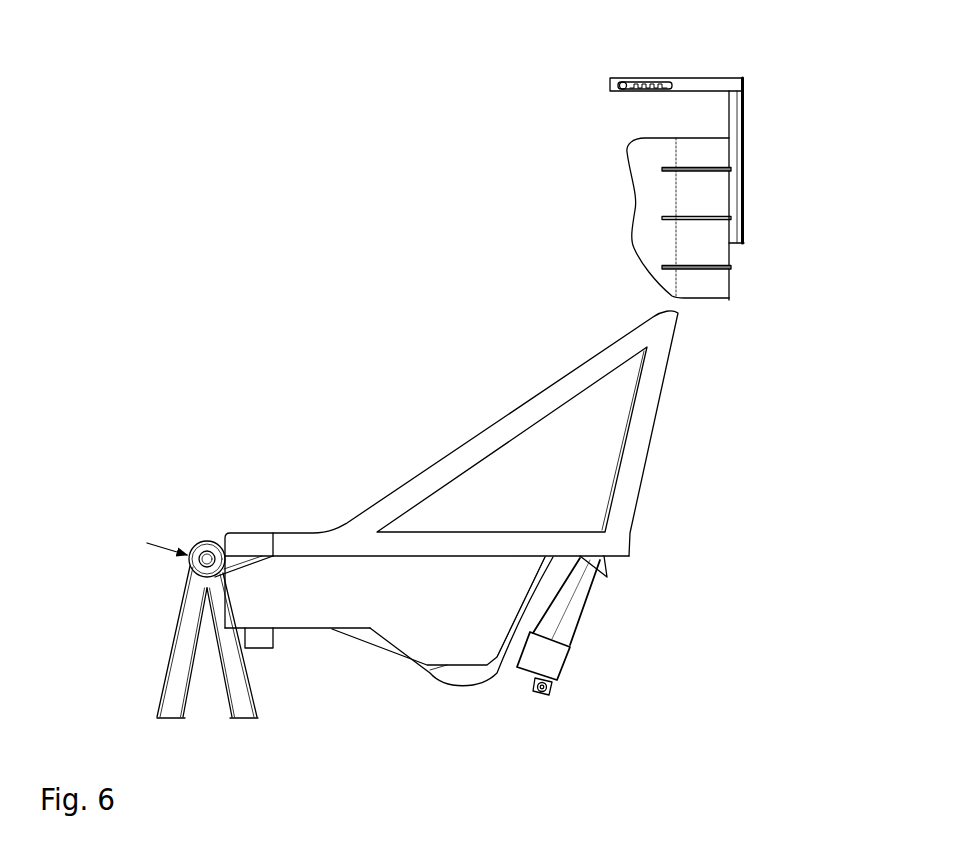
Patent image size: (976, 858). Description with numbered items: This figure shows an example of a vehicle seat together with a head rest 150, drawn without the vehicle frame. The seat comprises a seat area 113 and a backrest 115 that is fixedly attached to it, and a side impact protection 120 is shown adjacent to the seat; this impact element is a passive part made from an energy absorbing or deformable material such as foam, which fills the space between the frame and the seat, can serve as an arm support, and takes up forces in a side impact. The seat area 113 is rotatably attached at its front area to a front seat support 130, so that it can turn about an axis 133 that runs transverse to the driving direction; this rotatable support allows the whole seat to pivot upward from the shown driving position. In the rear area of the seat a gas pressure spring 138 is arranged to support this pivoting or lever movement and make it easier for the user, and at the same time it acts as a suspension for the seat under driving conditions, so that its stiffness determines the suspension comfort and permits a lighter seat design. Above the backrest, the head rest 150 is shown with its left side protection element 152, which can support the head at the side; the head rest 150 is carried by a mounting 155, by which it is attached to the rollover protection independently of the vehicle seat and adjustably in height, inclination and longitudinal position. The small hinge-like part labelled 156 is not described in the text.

The seat area 113 is at (395, 655).
The backrest 115 is at (538, 603).
The side impact protection 120 is at (451, 479).
The front seat support 130 is at (170, 617).
The axis 133 is at (207, 550).
The gas pressure spring 138 is at (565, 614).
The head rest 150 is at (557, 110).
The left side protection element 152 is at (640, 178).
The mounting 155 is at (735, 117).
The hinge 156 is at (643, 80).